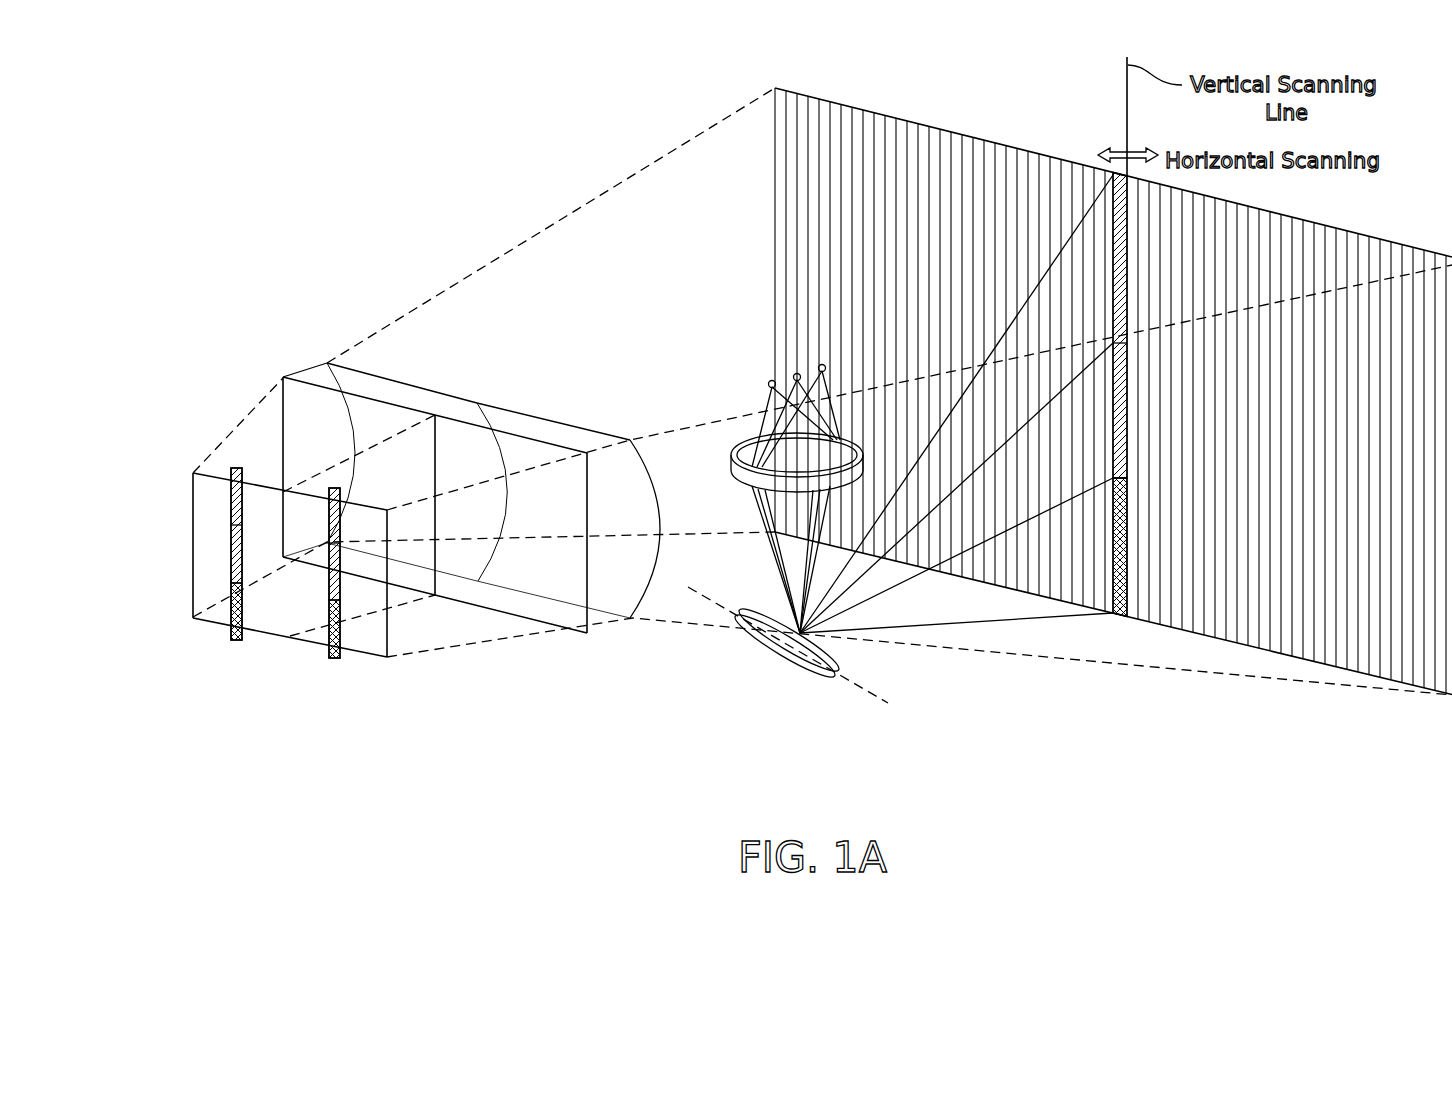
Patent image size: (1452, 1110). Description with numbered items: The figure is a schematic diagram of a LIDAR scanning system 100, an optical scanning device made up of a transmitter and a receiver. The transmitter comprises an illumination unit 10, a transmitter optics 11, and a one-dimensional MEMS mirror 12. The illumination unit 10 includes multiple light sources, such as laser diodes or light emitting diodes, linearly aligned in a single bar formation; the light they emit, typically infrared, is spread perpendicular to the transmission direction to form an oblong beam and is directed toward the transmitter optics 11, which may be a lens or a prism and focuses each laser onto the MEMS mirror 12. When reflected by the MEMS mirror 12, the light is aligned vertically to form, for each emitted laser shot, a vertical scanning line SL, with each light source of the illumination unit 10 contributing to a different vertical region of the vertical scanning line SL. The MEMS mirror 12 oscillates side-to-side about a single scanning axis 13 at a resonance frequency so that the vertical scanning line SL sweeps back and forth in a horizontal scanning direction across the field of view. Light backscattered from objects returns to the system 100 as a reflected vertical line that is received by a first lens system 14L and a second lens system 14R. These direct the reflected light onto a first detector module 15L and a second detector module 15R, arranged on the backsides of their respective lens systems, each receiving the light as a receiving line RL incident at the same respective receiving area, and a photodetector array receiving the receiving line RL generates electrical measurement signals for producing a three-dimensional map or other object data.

The LIDAR scanning system 100 is at (358, 150).
The illumination unit 10 is at (762, 368).
The transmitter optics 11 is at (731, 457).
The MEMS mirror 12 is at (840, 660).
The scanning axis 13 is at (855, 687).
The first lens system 14L is at (433, 412).
The second lens system 14R is at (549, 440).
The first detector module 15L is at (193, 492).
The second detector module 15R is at (383, 657).
The receiving line RL is at (235, 650).
The vertical scanning line SL is at (1118, 171).